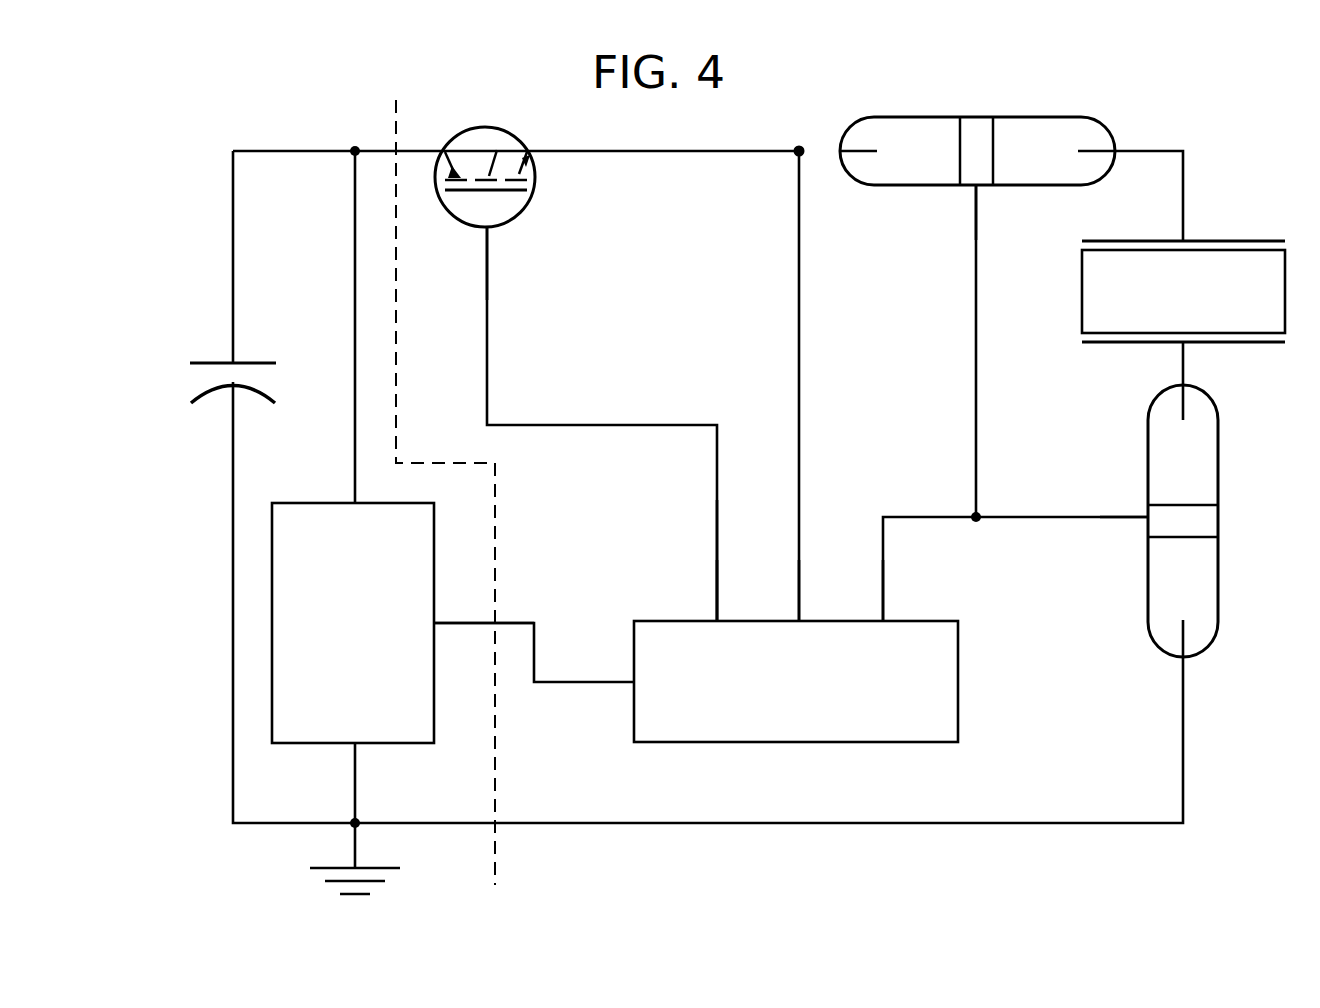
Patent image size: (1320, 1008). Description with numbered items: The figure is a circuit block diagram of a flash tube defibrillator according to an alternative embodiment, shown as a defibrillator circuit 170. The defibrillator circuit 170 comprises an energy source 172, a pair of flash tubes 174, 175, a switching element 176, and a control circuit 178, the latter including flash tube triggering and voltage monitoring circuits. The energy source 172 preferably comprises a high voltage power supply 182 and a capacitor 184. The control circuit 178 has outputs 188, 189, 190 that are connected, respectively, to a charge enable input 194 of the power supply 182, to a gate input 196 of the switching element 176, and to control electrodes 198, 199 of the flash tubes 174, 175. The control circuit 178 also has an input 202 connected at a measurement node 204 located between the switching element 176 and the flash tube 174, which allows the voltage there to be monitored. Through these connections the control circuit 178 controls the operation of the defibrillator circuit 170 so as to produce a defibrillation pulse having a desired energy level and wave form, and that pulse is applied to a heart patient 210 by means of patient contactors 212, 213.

The defibrillator circuit 170 is at (860, 90).
The energy source 172 is at (485, 494).
The flash tube 174 is at (920, 186).
The flash tube 175 is at (1148, 651).
The switching element 176 is at (535, 180).
The control circuit 178 is at (715, 621).
The high voltage power supply 182 is at (325, 503).
The capacitor 184 is at (255, 363).
The output 188 is at (634, 684).
The output 189 is at (713, 621).
The output 190 is at (880, 621).
The charge enable input 194 is at (436, 624).
The gate input 196 is at (488, 228).
The control electrode 198 is at (983, 186).
The control electrode 199 is at (1147, 516).
The input 202 is at (797, 621).
The measurement node 204 is at (797, 153).
The heart patient 210 is at (1082, 302).
The patient contactor 212 is at (1145, 240).
The patient contactor 213 is at (1125, 343).